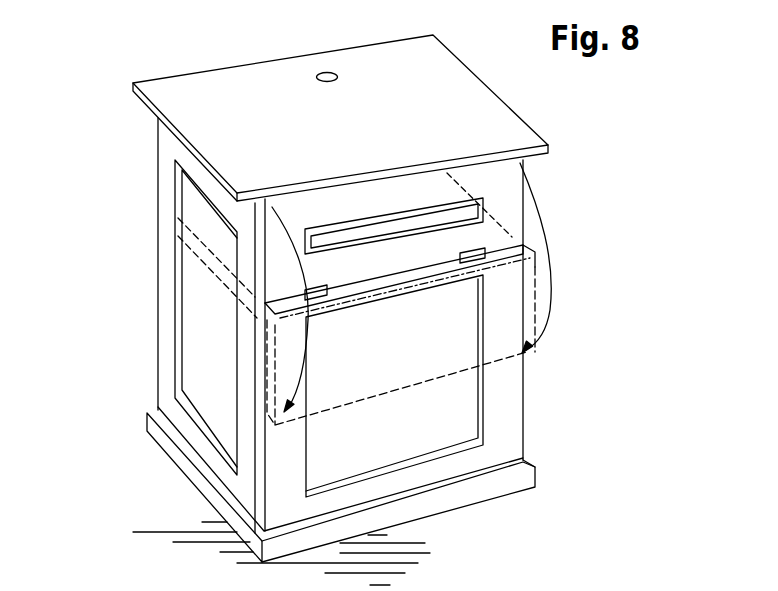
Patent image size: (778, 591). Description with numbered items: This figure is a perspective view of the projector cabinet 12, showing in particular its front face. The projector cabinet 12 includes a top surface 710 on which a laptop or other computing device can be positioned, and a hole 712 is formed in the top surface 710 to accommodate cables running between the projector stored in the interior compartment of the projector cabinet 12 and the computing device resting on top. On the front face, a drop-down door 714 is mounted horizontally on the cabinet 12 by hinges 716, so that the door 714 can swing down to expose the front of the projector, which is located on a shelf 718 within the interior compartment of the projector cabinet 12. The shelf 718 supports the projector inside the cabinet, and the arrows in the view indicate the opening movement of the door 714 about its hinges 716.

The projector cabinet 12 is at (198, 55).
The top surface 710 is at (483, 103).
The hole 712 is at (326, 73).
The drop-down door 714 is at (510, 197).
The hinges 716 is at (327, 296).
The shelf 718 is at (217, 232).